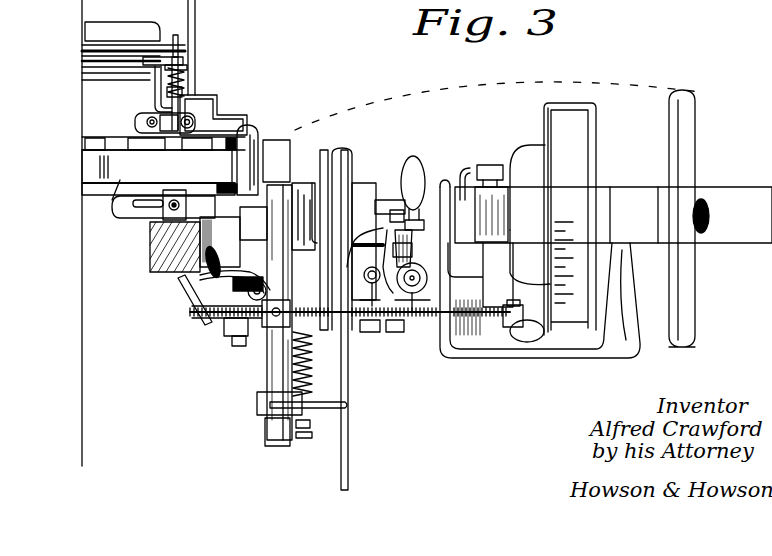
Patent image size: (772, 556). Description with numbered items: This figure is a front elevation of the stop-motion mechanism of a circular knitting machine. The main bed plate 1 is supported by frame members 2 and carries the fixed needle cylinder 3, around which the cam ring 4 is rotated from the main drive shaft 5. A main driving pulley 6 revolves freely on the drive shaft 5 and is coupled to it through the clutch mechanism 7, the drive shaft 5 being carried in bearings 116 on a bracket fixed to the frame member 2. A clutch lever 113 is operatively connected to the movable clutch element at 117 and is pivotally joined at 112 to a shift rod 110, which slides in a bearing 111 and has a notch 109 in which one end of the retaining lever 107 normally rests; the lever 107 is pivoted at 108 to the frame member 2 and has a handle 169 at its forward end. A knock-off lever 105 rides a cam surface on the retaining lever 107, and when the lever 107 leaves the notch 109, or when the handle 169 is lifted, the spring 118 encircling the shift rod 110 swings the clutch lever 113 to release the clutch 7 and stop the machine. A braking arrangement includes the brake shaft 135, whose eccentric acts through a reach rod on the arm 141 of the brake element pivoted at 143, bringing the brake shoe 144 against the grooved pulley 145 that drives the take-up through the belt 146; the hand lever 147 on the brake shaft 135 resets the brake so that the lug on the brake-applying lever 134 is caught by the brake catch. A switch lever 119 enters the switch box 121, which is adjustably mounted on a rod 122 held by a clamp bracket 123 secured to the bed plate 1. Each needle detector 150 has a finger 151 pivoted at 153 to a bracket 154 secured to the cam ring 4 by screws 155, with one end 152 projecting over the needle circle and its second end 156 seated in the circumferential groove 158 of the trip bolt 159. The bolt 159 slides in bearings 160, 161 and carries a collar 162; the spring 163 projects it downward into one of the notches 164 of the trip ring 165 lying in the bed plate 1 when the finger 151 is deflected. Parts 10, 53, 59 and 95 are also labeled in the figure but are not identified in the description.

The main bed plate 1 is at (162, 174).
The frame members 2 is at (267, 431).
The needle cylinder 3 is at (88, 47).
The cam ring 4 is at (254, 149).
The main drive shaft 5 is at (124, 214).
The main driving pulley 6 is at (568, 110).
The clutch mechanism 7 is at (535, 222).
The cover 10 is at (88, 29).
The rod 53 is at (197, 7).
The curved lever 59 is at (180, 279).
The slotted block 95 is at (258, 403).
The knock-off lever 105 is at (192, 290).
The retaining lever 107 is at (230, 318).
The pivot of retaining lever 108 is at (233, 328).
The notch 109 is at (228, 334).
The shift rod 110 is at (228, 328).
The bearing 111 is at (265, 360).
The pivotal connection 112 is at (523, 307).
The clutch lever 113 is at (497, 338).
The bearings 116 is at (441, 187).
The connection to clutch element 117 is at (492, 163).
The spring 118 is at (421, 335).
The switch lever 119 is at (222, 305).
The switch box 121 is at (150, 268).
The rod 122 is at (146, 208).
The clamp bracket 123 is at (263, 143).
The brake-applying lever 134 is at (379, 325).
The brake shaft 135 is at (402, 325).
The arm 141 is at (368, 182).
The pivot of brake element 143 is at (347, 322).
The brake shoe 144 is at (350, 335).
The grooved pulley 145 is at (327, 150).
The belt 146 is at (348, 433).
The hand lever 147 is at (413, 156).
The needle detector 150 is at (182, 50).
The finger 151 is at (123, 50).
The end of finger 152 is at (92, 52).
The pivot of finger 153 is at (158, 40).
The bracket 154 is at (160, 107).
The screws 155 is at (137, 124).
The second end of finger 156 is at (190, 56).
The circumferential groove 158 is at (186, 61).
The trip bolt 159 is at (180, 36).
The bearing 160 is at (184, 66).
The bearing 161 is at (200, 114).
The collar 162 is at (167, 92).
The spring 163 is at (84, 72).
The notches 164 is at (159, 192).
The trip ring 165 is at (88, 146).
The handle 169 is at (228, 325).